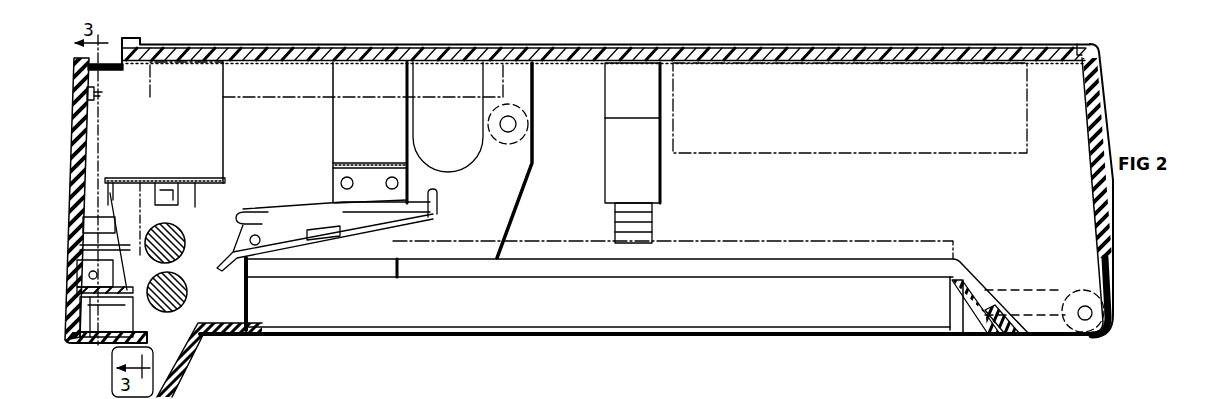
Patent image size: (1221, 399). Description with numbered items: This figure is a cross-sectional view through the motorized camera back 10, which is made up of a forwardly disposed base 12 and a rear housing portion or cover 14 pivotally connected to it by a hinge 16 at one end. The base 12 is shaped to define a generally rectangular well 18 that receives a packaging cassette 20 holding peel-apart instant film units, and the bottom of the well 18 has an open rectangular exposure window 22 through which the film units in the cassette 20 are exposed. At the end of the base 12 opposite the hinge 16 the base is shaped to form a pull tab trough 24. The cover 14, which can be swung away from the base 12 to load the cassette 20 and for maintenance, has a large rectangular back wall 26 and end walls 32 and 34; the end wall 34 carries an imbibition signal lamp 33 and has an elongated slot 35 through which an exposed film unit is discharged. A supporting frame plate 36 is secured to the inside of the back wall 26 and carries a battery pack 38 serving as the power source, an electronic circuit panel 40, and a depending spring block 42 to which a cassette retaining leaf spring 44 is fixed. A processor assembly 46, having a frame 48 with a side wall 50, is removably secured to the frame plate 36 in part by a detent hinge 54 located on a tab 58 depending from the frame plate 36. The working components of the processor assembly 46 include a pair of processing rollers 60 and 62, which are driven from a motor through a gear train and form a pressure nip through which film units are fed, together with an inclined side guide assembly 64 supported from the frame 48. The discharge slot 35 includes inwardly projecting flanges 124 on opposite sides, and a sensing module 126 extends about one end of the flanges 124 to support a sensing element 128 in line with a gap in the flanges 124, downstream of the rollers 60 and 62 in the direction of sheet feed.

The motorized camera back 10 is at (783, 40).
The base 12 is at (958, 328).
The cover 14 is at (1117, 207).
The hinge 16 is at (1085, 320).
The well 18 is at (948, 300).
The packaging cassette 20 is at (762, 238).
The exposure window 22 is at (610, 338).
The pull tab trough 24 is at (165, 383).
The back wall 26 is at (648, 45).
The end wall 32 is at (1095, 165).
The imbibition signal lamp 33 is at (86, 93).
The end wall 34 is at (78, 122).
The slot 35 is at (78, 278).
The supporting frame plate 36 is at (557, 63).
The battery pack 38 is at (862, 142).
The electronic circuit panel 40 is at (247, 88).
The spring block 42 is at (652, 175).
The cassette retaining leaf spring 44 is at (650, 243).
The processor assembly 46 is at (210, 160).
The frame 48 is at (310, 158).
The side wall 50 is at (514, 212).
The detent hinge 54 is at (512, 126).
The tab 58 is at (490, 78).
The processing roller 60 is at (186, 240).
The processing roller 62 is at (188, 292).
The inclined side guide assembly 64 is at (300, 250).
The flange 124 is at (108, 190).
The sensing module 126 is at (104, 318).
The sensing element 128 is at (66, 200).